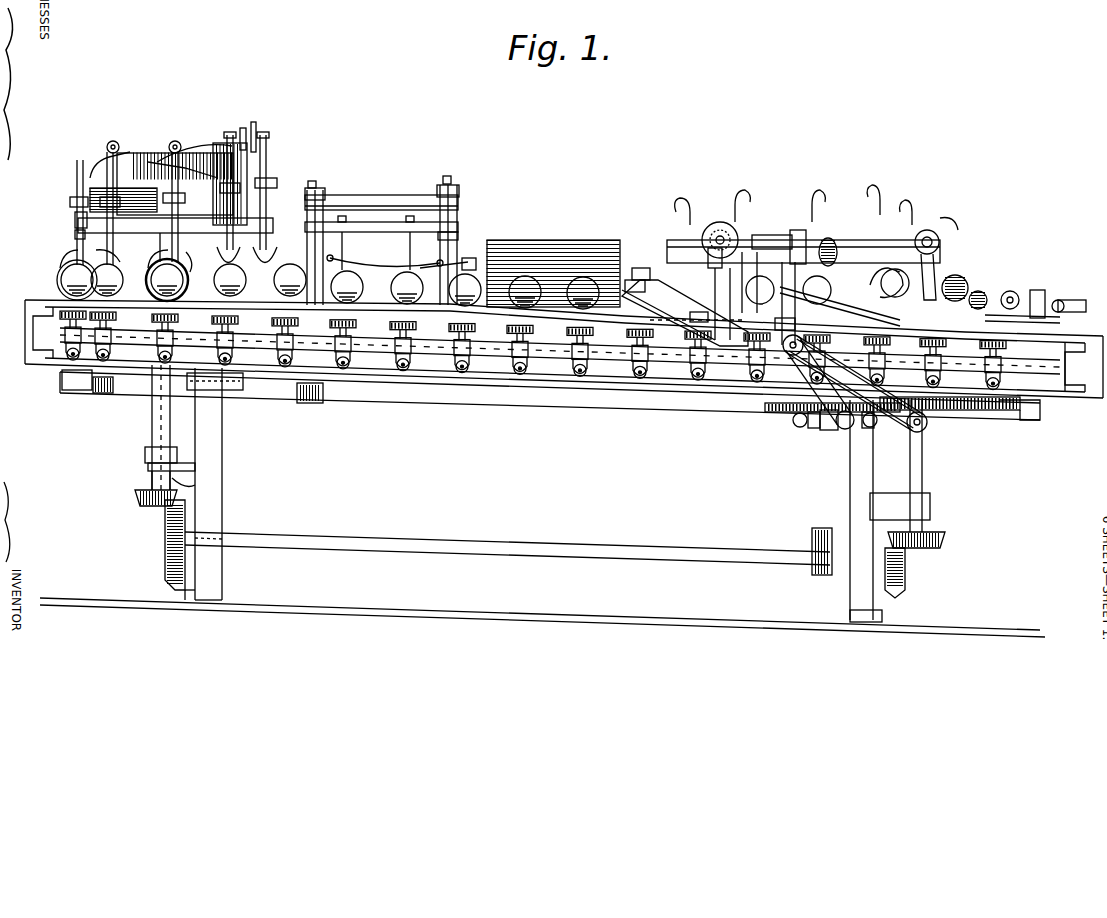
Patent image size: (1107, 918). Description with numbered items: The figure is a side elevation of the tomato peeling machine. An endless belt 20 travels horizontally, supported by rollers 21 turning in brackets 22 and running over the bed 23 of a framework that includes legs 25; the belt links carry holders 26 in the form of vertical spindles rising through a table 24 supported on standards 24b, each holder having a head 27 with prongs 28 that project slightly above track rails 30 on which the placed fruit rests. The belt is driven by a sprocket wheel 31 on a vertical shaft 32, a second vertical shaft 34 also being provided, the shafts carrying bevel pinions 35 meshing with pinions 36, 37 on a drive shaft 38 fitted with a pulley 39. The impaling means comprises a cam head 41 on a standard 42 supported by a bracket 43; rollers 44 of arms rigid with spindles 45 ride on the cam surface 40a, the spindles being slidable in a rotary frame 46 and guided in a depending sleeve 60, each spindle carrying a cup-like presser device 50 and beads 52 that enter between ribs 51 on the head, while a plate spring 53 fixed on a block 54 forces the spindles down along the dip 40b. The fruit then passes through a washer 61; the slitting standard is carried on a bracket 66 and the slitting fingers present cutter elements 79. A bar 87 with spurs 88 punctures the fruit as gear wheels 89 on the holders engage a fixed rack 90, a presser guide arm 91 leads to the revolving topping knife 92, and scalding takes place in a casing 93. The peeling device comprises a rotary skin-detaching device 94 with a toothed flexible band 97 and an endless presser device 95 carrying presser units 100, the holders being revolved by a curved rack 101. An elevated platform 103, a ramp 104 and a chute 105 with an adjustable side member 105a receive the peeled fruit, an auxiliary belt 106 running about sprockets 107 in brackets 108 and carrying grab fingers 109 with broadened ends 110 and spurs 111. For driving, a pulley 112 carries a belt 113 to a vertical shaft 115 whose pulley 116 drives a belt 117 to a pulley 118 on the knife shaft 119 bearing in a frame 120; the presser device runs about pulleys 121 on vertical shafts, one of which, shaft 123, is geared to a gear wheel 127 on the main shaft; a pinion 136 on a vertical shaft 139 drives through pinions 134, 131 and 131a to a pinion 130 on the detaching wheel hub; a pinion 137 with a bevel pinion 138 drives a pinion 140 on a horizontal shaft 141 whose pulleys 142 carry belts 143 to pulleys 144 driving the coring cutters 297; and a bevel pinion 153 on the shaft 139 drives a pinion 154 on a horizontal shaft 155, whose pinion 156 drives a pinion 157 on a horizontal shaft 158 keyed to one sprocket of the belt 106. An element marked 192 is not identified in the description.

The endless belt 20 is at (500, 362).
The rollers 21 is at (408, 368).
The brackets 22 is at (400, 364).
The bed 23 is at (578, 375).
The table 24 is at (640, 318).
The standards 24b is at (615, 372).
The legs 25 is at (222, 472).
The holders 26 is at (524, 337).
The head 27 is at (512, 326).
The prongs 28 is at (640, 280).
The track rails 30 is at (630, 292).
The sprocket wheel 31 is at (1000, 363).
The vertical shaft 32 is at (922, 462).
The vertical shaft 34 is at (148, 467).
The bevel pinions 35 is at (137, 498).
The bevel pinion 36 is at (896, 585).
The bevel pinion 37 is at (165, 563).
The drive shaft 38 is at (322, 543).
The pulley 39 is at (812, 574).
The cam surface 40a is at (100, 160).
The dip of cam surface 40b is at (184, 169).
The head 41 is at (138, 153).
The standard 42 is at (150, 478).
The bracket 43 is at (145, 453).
The rollers 44 is at (255, 125).
The spindles 45 is at (266, 145).
The rotary frame 46 is at (75, 219).
The presser device 50 is at (64, 277).
The ribs 51 is at (140, 190).
The beads 52 is at (70, 199).
The plate spring 53 is at (210, 146).
The block 54 is at (242, 130).
The sleeve 60 is at (75, 235).
The washer 61 is at (141, 247).
The bracket 66 is at (200, 483).
The cutter elements 79 is at (160, 355).
The bar 87 is at (465, 290).
The teeth 88 is at (370, 268).
The gear wheels 89 is at (274, 318).
The rack 90 is at (380, 372).
The arm 91 is at (428, 266).
The topping knife 92 is at (467, 254).
The casing 93 is at (545, 242).
The skin-detaching device 94 is at (978, 291).
The presser device 95 is at (1035, 292).
The band 97 is at (952, 278).
The presser units 100 is at (1077, 297).
The curved rack 101 is at (955, 400).
The platform 103 is at (772, 300).
The ramp 104 is at (860, 315).
The chute 105 is at (685, 300).
The side member 105a is at (723, 312).
The auxiliary belt 106 is at (803, 232).
The sprockets 107 is at (702, 235).
The brackets 108 is at (940, 242).
The grab fingers 109 is at (898, 222).
The finger ends 110 is at (888, 233).
The spurs 111 is at (884, 200).
The belt pulley 112 is at (104, 394).
The belt 113 is at (260, 392).
The vertical shaft 115 is at (307, 246).
The pulley 116 is at (318, 190).
The belt 117 is at (381, 195).
The pulley 118 is at (459, 195).
The vertical shaft 119 is at (310, 404).
The frame 120 is at (458, 226).
The pulley 121 is at (1022, 297).
The vertical shaft 123 is at (980, 411).
The gear wheel 127 is at (998, 410).
The pinion 130 is at (950, 285).
The pinion 131 is at (897, 378).
The pinion 131a is at (858, 281).
The intermediate pinion 134 is at (842, 347).
The pinion 136 is at (855, 384).
The pinion 137 is at (790, 412).
The bevel pinion 138 is at (796, 426).
The vertical shaft 139 is at (787, 361).
The bevel pinion 140 is at (820, 394).
The horizontal shaft 141 is at (869, 428).
The pulleys 142 is at (912, 432).
The belts 143 is at (825, 436).
The pulleys 144 is at (718, 378).
The bevel pinion 153 is at (798, 228).
The bevel pinion 154 is at (830, 238).
The horizontal shaft 155 is at (765, 232).
The bevel pinion 156 is at (742, 220).
The bevel pinion 157 is at (700, 210).
The horizontal shaft 158 is at (708, 254).
The bearing block 192 is at (832, 432).
The coring cutters 297 is at (790, 317).